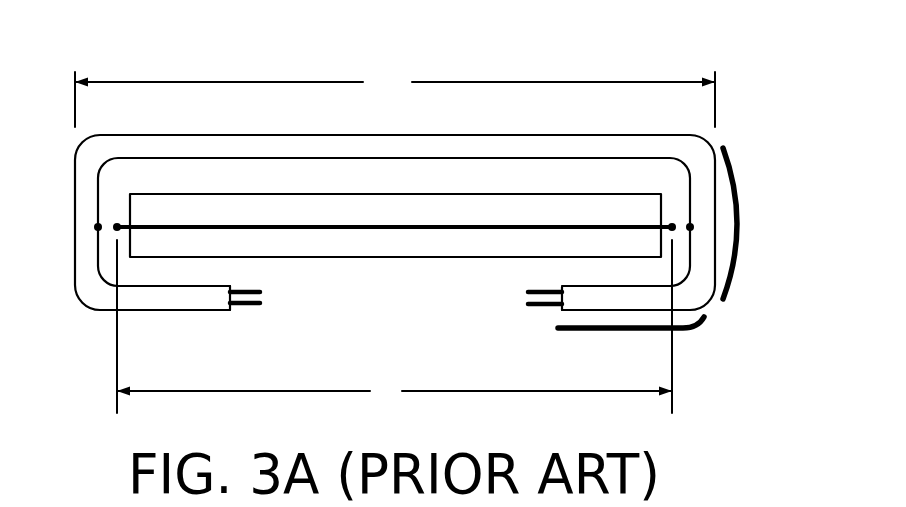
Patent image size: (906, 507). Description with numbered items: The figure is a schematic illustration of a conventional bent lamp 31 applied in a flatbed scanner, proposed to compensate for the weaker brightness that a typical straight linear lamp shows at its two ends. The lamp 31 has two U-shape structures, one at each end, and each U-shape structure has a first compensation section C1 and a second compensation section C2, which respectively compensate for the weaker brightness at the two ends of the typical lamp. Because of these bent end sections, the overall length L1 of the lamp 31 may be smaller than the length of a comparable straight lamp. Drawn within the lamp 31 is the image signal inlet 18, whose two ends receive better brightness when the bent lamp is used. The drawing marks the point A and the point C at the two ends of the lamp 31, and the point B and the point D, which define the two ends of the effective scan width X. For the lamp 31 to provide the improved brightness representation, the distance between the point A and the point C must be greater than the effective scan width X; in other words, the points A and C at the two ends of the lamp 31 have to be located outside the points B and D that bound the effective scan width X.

The lamp 31 is at (555, 150).
The image signal inlet 18 is at (418, 243).
The point A is at (98, 227).
The point B is at (117, 227).
The point C is at (690, 227).
The point D is at (672, 227).
The first compensation section C1 is at (642, 333).
The second compensation section C2 is at (737, 246).
The length L1 is at (395, 98).
The effective scan width X is at (394, 326).